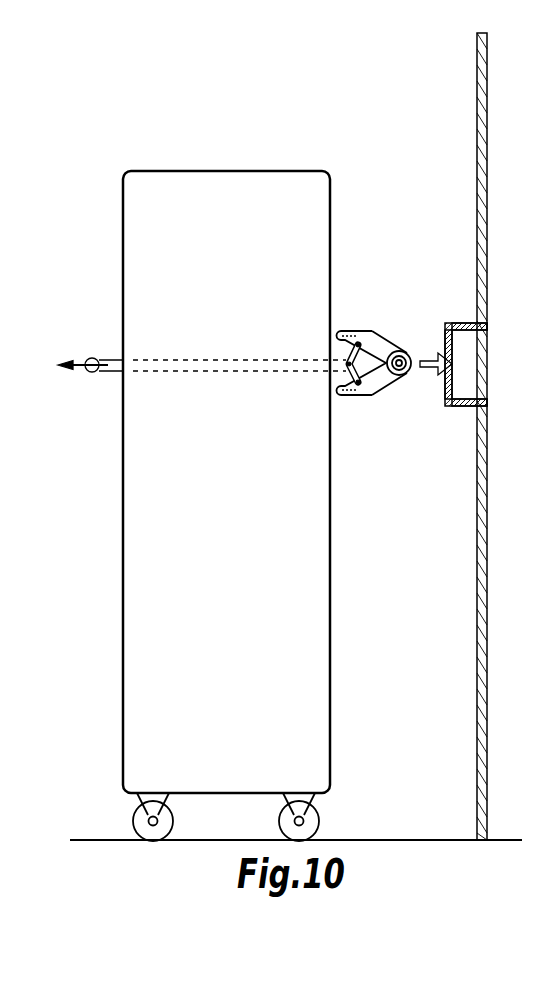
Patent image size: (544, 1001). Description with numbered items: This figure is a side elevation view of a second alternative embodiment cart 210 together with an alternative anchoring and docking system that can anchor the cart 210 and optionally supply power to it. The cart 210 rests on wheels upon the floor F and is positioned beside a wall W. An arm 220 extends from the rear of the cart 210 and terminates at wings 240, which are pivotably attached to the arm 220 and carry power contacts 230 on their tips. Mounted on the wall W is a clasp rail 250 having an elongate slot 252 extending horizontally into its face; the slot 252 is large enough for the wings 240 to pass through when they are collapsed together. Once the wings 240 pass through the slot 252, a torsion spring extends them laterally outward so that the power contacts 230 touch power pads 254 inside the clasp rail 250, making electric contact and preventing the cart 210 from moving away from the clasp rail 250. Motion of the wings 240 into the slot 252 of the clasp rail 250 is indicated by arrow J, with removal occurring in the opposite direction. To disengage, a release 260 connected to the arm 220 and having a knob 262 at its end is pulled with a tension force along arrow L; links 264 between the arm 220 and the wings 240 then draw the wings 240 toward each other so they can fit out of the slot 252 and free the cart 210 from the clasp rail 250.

The cart 210 is at (246, 531).
The arm 220 is at (345, 366).
The power contacts 230 is at (349, 330).
The wings 240 is at (386, 346).
The clasp rail 250 is at (469, 322).
The slot 252 is at (447, 355).
The power pads 254 is at (465, 331).
The release 260 is at (104, 357).
The knob 262 is at (91, 373).
The links 264 is at (347, 360).
The arrow L is at (80, 358).
The arrow J is at (432, 374).
The wall W is at (483, 97).
The floor F is at (423, 838).